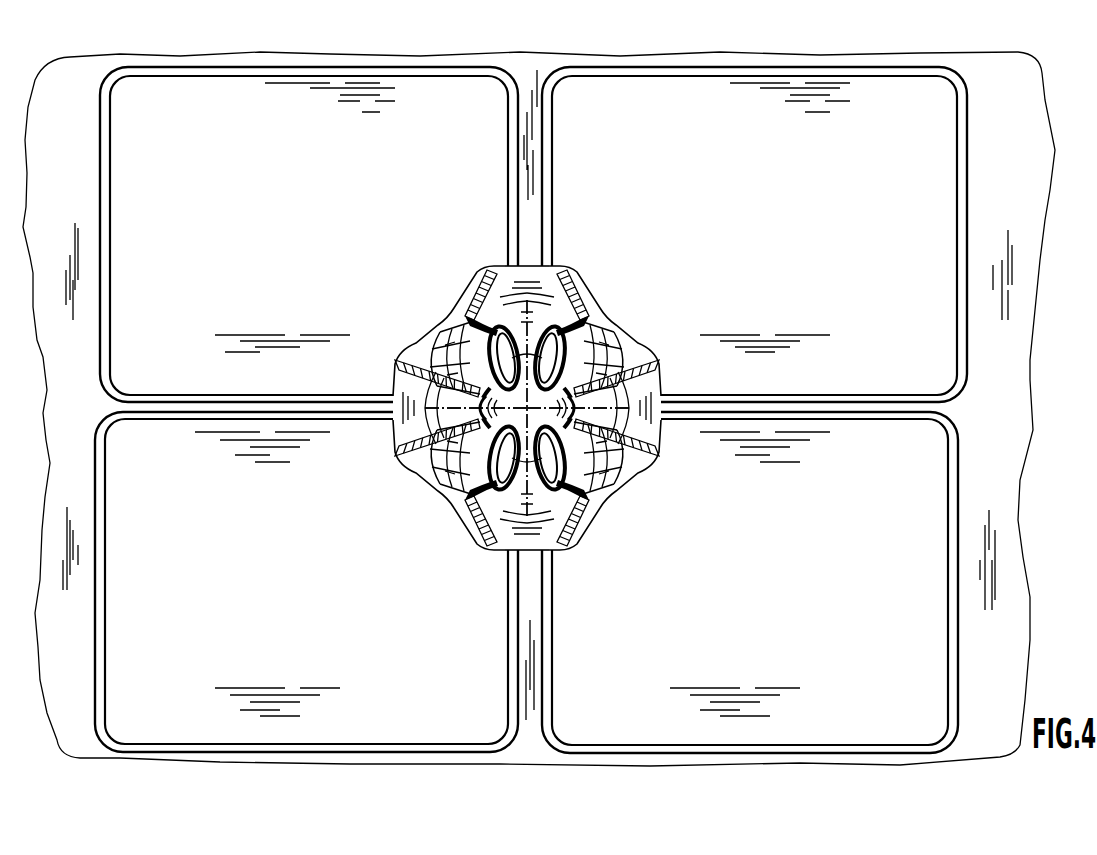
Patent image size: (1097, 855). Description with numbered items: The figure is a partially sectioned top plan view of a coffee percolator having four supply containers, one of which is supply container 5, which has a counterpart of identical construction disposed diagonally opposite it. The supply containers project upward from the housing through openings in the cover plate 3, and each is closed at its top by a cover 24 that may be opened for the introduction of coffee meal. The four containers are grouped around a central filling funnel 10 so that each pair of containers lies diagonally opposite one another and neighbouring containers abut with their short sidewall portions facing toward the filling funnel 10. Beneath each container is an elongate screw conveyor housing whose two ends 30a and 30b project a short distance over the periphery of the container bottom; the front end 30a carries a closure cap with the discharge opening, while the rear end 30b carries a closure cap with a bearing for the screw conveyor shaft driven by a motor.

The cover plate 3 is at (82, 414).
The supply container 5 is at (163, 187).
The cover 24 is at (318, 231).
The filling funnel 10 is at (546, 401).
The end of screw conveyor housing 30a is at (490, 331).
The end of screw conveyor housing 30b is at (566, 331).